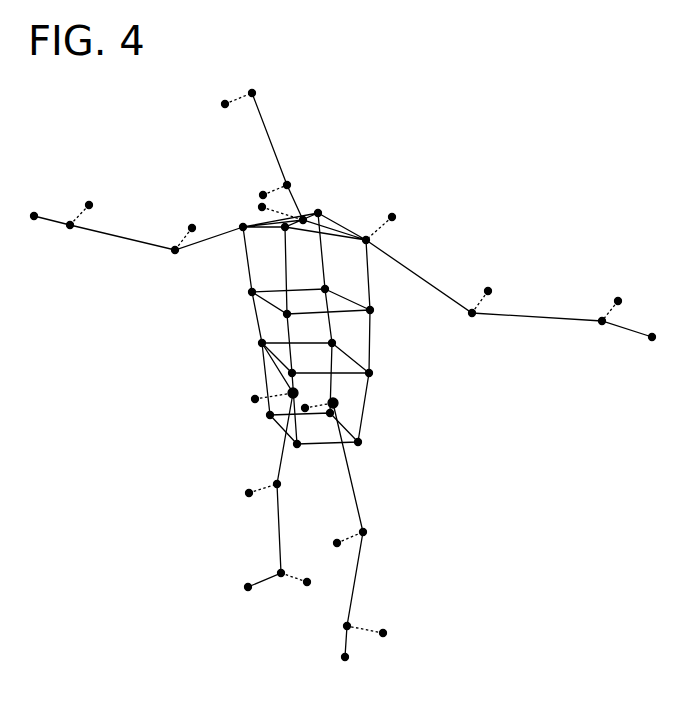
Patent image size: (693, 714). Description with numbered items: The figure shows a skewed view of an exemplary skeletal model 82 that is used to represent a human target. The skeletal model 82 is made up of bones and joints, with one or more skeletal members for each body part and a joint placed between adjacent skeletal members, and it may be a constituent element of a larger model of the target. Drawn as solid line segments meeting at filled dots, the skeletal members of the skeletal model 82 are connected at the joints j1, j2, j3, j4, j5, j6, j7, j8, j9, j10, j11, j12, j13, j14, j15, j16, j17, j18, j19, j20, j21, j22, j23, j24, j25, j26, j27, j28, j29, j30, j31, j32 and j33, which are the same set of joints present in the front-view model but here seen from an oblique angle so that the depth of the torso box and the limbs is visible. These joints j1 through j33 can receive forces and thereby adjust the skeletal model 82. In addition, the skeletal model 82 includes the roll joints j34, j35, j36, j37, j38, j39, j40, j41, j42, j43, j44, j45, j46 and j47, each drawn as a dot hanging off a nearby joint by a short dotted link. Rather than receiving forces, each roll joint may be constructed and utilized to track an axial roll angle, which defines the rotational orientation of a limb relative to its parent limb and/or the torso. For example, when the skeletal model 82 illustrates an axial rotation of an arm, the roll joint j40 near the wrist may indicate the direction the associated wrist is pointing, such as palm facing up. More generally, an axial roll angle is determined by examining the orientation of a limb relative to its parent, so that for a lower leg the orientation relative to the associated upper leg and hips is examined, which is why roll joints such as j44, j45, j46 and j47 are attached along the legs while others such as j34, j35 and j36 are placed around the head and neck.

The skeletal model 82 is at (411, 80).
The joint j1 is at (241, 233).
The joint j2 is at (372, 240).
The joint j3 is at (287, 234).
The joint j4 is at (324, 213).
The joint j5 is at (247, 291).
The joint j6 is at (376, 309).
The joint j7 is at (290, 310).
The joint j8 is at (329, 286).
The joint j9 is at (257, 341).
The joint j10 is at (375, 371).
The joint j11 is at (296, 372).
The joint j12 is at (338, 341).
The joint j13 is at (265, 417).
The joint j14 is at (364, 440).
The joint j15 is at (292, 447).
The joint j16 is at (326, 418).
The joint j17 is at (170, 252).
The joint j18 is at (476, 319).
The joint j19 is at (68, 231).
The joint j20 is at (600, 327).
The joint j21 is at (34, 210).
The joint j22 is at (651, 343).
The joint j23 is at (282, 485).
The joint j24 is at (369, 531).
The joint j25 is at (276, 571).
The joint j26 is at (342, 628).
The joint j27 is at (243, 589).
The joint j28 is at (351, 657).
The joint j29 is at (287, 389).
The joint j30 is at (340, 404).
The joint j31 is at (305, 214).
The joint j32 is at (289, 178).
The joint j33 is at (258, 90).
The roll joint j34 is at (261, 189).
The roll joint j35 is at (220, 102).
The roll joint j36 is at (257, 207).
The roll joint j37 is at (396, 212).
The roll joint j38 is at (187, 226).
The roll joint j39 is at (493, 288).
The roll joint j40 is at (94, 203).
The roll joint j41 is at (623, 298).
The roll joint j42 is at (250, 398).
The roll joint j43 is at (309, 401).
The roll joint j44 is at (244, 491).
The roll joint j45 is at (336, 537).
The roll joint j46 is at (305, 588).
The roll joint j47 is at (389, 631).